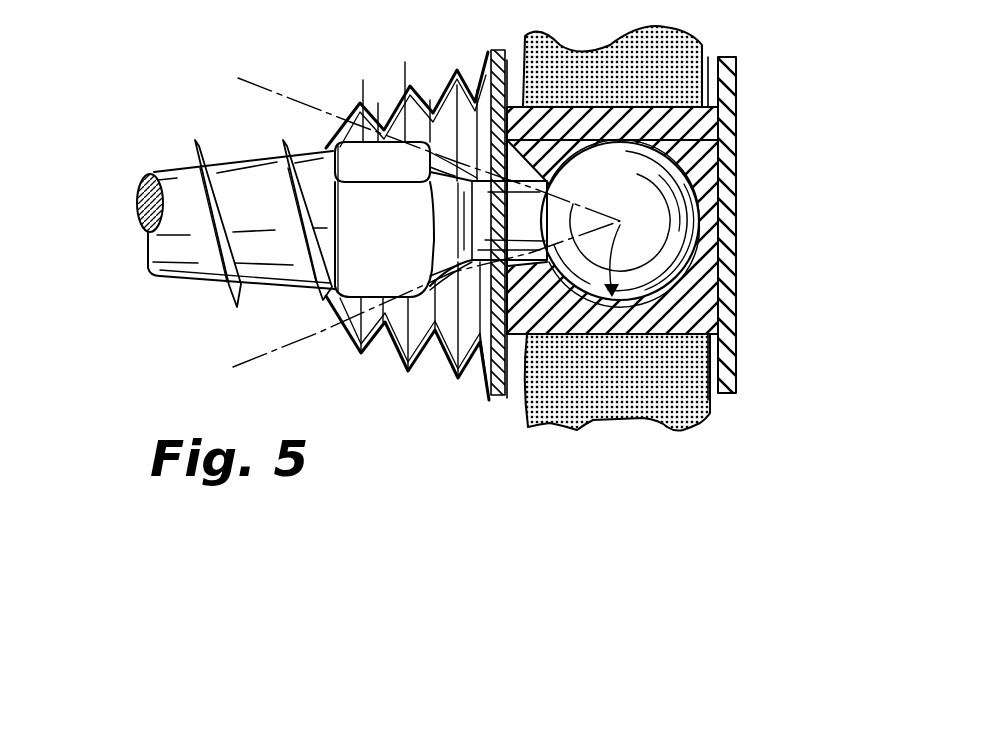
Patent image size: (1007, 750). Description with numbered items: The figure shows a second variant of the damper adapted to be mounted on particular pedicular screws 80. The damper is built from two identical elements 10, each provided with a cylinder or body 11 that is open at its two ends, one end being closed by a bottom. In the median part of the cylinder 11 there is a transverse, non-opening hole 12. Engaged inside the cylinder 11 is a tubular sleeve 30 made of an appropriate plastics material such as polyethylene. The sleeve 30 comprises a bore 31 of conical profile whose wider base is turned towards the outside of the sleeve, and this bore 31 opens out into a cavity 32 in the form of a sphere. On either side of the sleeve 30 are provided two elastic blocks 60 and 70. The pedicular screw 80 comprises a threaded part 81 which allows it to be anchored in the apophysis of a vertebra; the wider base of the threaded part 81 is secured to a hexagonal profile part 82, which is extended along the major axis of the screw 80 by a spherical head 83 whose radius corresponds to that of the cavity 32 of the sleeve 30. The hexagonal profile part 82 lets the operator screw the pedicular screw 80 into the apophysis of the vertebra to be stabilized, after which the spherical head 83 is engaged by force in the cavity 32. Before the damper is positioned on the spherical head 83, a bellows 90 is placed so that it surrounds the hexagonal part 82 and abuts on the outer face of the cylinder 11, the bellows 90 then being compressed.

The element 10 is at (550, 447).
The cylinder 11 is at (727, 307).
The transverse non-opening hole 12 is at (490, 292).
The tubular sleeve 30 is at (850, 119).
The bore 31 is at (541, 280).
The cavity 32 is at (725, 268).
The elastic block 60 is at (680, 40).
The elastic block 70 is at (692, 411).
The pedicular screw 80 is at (183, 313).
The threaded part 81 is at (168, 178).
The hexagonal profile part 82 is at (360, 280).
The spherical head 83 is at (652, 172).
The bellows 90 is at (392, 112).